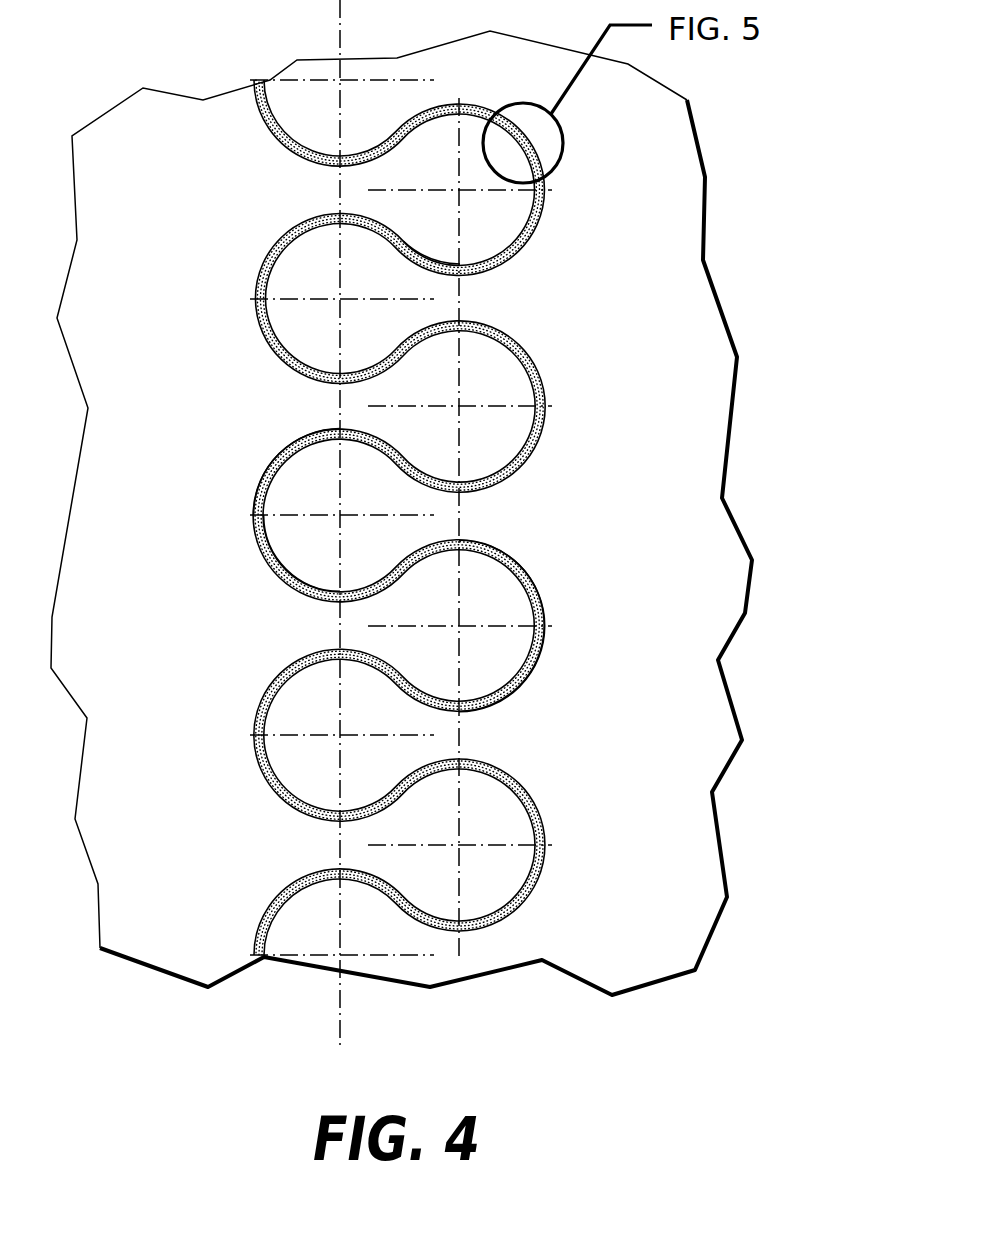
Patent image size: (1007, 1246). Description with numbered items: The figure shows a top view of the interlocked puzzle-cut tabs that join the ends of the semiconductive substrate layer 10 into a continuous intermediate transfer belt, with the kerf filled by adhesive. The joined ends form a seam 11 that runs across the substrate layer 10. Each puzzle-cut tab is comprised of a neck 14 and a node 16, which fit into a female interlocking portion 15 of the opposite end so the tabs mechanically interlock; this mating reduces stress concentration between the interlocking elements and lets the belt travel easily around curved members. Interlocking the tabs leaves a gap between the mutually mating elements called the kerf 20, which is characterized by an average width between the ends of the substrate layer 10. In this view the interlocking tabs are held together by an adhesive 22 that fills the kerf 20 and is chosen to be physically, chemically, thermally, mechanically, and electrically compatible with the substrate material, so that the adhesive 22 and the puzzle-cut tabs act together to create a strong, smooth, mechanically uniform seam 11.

The substrate layer 10 is at (705, 322).
The seam 11 is at (548, 358).
The neck 14 is at (457, 297).
The female interlocking portion 15 is at (272, 470).
The node 16 is at (293, 572).
The kerf 20 is at (513, 560).
The adhesive 22 is at (507, 695).